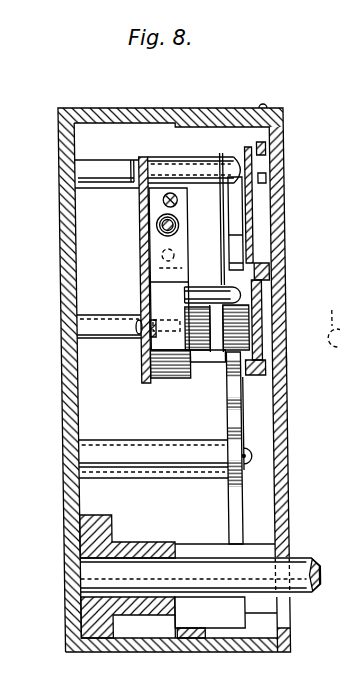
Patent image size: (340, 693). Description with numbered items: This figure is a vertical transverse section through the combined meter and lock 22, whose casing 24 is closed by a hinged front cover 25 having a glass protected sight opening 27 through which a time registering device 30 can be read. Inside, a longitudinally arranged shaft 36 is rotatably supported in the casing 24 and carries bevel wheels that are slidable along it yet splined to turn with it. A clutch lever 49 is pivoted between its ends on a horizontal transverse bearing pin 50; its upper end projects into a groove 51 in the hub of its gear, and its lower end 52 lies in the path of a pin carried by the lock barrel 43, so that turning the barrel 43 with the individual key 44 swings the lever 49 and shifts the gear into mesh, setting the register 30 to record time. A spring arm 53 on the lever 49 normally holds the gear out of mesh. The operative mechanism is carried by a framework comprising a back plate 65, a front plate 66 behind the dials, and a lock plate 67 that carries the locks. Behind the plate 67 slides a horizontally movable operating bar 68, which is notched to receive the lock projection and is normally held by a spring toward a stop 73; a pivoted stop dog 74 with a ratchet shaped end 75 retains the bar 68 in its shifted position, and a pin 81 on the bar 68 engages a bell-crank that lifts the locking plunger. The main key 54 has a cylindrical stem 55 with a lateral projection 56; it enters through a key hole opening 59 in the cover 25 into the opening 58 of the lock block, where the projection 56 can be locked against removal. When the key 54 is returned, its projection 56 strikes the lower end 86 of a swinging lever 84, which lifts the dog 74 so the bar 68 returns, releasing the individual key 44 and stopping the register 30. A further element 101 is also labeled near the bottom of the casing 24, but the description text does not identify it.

The combined meter and lock 22 is at (166, 103).
The casing 24 is at (58, 250).
The hinged front cover 25 is at (283, 497).
The sight opening 27 is at (286, 167).
The time registering device 30 is at (283, 228).
The longitudinally arranged shaft 36 is at (155, 228).
The lock barrel 43 is at (284, 359).
The key 44 is at (325, 317).
The clutch lever 49 is at (158, 262).
The bearing pin 50 is at (195, 285).
The groove 51 is at (177, 217).
The lower end of lever 52 is at (182, 325).
The spring arm 53 is at (144, 330).
The key 54 is at (309, 602).
The cylindrical stem 55 is at (306, 558).
The lateral projection 56 is at (218, 620).
The opening 58 is at (181, 557).
The key hole opening 59 is at (283, 605).
The back plate 65 is at (137, 212).
The front plate 66 is at (246, 189).
The lock plate 67 is at (262, 350).
The operating bar 68 is at (239, 372).
The stop 73 is at (272, 312).
The stop dog 74 is at (197, 350).
The ratchet shaped end 75 is at (212, 358).
The pin 81 is at (225, 358).
The swinging lever 84 is at (224, 417).
The lower end of lever 86 is at (222, 492).
The pad 101 is at (173, 650).